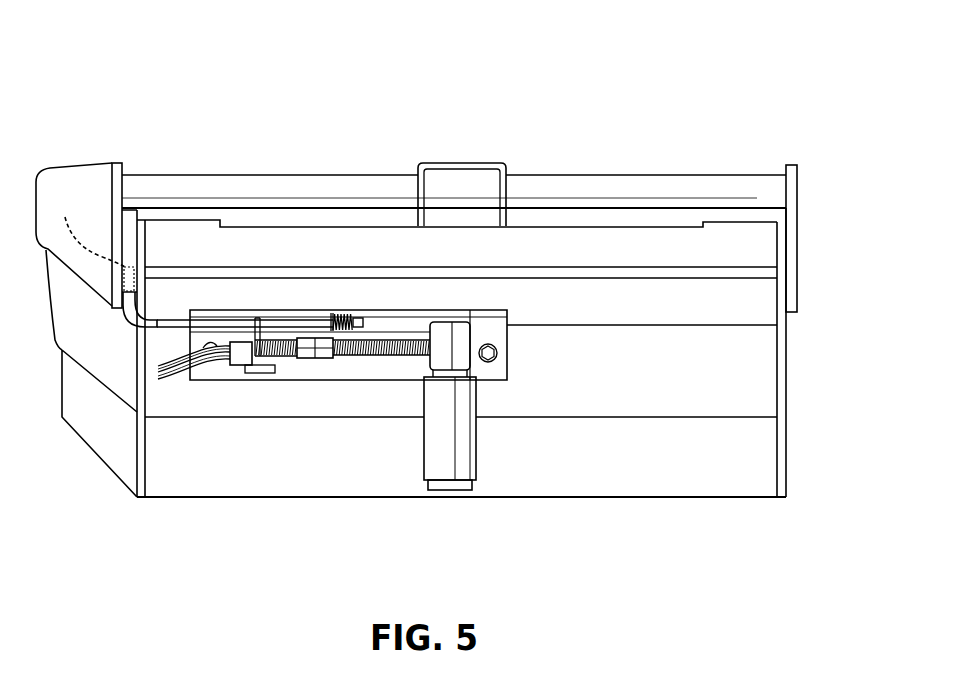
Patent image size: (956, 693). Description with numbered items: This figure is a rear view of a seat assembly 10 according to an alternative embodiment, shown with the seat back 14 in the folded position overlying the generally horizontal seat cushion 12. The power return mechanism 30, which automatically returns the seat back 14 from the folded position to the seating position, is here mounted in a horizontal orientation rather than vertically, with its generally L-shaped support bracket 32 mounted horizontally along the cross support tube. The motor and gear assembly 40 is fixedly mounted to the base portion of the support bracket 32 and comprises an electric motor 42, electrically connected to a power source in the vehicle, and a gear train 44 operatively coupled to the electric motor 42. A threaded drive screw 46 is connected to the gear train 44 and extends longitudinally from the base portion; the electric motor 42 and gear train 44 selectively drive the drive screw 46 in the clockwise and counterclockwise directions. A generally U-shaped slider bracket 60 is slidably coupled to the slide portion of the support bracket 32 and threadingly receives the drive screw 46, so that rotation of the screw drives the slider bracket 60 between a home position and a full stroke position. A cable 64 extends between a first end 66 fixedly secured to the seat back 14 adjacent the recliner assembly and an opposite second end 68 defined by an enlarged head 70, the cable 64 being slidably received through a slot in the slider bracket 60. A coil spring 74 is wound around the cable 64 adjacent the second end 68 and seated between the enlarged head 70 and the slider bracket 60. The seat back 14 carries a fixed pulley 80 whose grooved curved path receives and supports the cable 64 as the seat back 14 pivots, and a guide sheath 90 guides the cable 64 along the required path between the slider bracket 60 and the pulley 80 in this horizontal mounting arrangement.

The seat assembly 10 is at (565, 104).
The seat cushion 12 is at (123, 377).
The seat back 14 is at (78, 178).
The power return mechanism 30 is at (648, 358).
The support bracket 32 is at (362, 381).
The motor and gear assembly 40 is at (484, 395).
The electric motor 42 is at (460, 458).
The gear train 44 is at (458, 331).
The threaded drive screw 46 is at (400, 357).
The slider bracket 60 is at (318, 359).
The cable 64 is at (174, 321).
The first end 66 is at (95, 241).
The second end 68 is at (338, 313).
The enlarged head 70 is at (362, 310).
The coil spring 74 is at (348, 316).
The pulley 80 is at (128, 225).
The guide sheath 90 is at (127, 313).